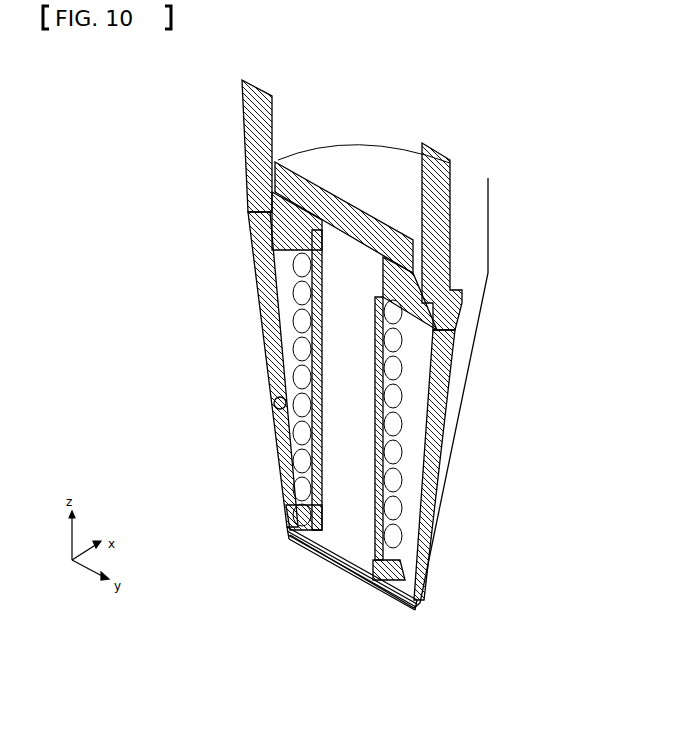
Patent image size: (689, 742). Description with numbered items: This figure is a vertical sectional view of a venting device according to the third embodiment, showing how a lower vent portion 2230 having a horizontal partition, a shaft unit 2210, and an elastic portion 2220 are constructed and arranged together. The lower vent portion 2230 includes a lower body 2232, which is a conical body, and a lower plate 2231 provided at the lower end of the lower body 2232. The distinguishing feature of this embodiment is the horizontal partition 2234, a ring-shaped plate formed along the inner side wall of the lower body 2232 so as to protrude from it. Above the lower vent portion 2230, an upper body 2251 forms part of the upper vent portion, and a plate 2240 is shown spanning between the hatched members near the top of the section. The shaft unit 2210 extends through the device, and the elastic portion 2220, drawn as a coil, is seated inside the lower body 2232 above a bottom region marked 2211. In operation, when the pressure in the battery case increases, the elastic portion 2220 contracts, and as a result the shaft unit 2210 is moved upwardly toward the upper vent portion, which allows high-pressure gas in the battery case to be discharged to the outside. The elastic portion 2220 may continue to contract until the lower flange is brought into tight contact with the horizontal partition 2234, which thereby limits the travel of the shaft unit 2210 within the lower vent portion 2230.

The shaft unit 2210 is at (373, 198).
The case bottom 2211 is at (349, 540).
The elastic portion 2220 is at (397, 456).
The lower vent portion 2230 is at (136, 313).
The lower plate 2231 is at (320, 556).
The lower body 2232 is at (270, 442).
The horizontal partition 2234 is at (272, 403).
The cap plate 2240 is at (300, 222).
The upper body 2251 is at (257, 133).